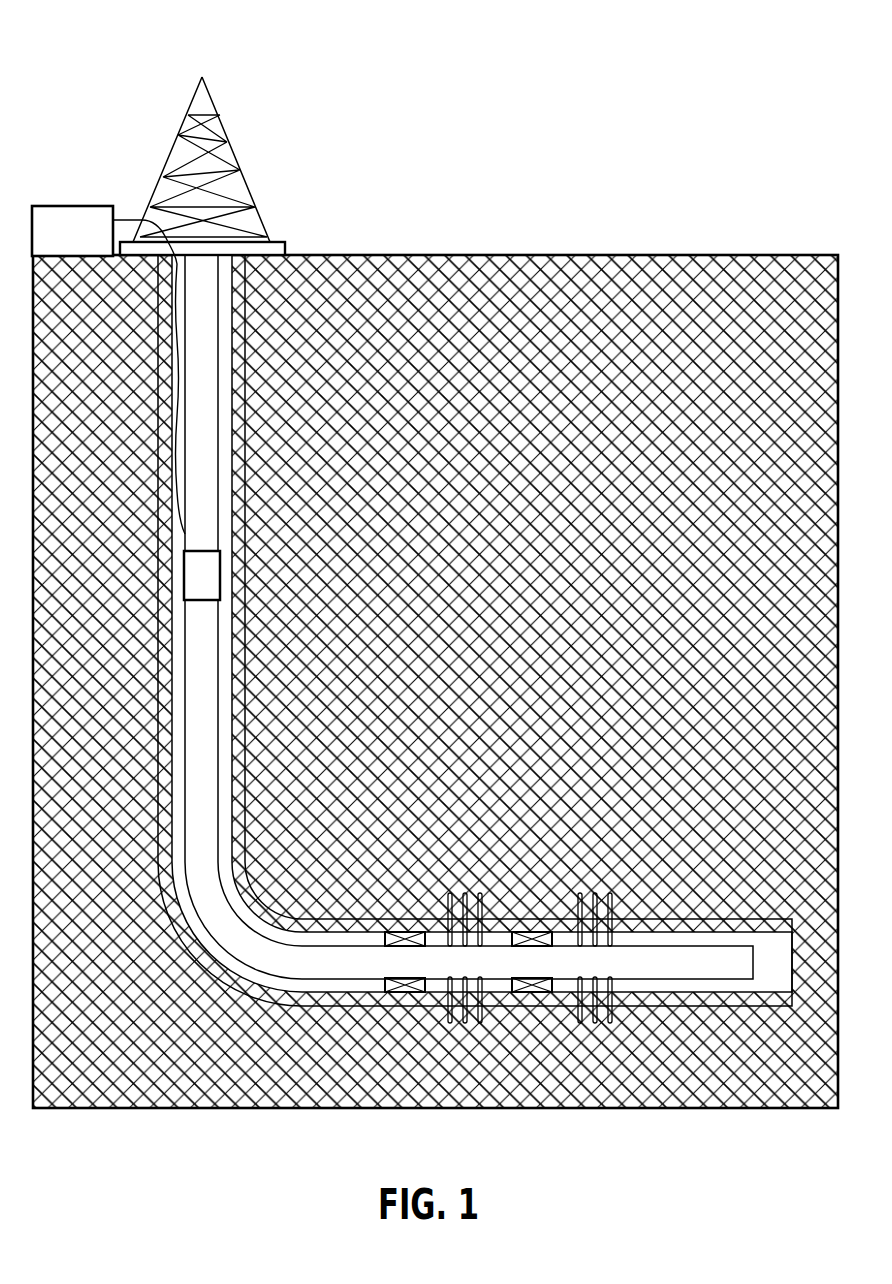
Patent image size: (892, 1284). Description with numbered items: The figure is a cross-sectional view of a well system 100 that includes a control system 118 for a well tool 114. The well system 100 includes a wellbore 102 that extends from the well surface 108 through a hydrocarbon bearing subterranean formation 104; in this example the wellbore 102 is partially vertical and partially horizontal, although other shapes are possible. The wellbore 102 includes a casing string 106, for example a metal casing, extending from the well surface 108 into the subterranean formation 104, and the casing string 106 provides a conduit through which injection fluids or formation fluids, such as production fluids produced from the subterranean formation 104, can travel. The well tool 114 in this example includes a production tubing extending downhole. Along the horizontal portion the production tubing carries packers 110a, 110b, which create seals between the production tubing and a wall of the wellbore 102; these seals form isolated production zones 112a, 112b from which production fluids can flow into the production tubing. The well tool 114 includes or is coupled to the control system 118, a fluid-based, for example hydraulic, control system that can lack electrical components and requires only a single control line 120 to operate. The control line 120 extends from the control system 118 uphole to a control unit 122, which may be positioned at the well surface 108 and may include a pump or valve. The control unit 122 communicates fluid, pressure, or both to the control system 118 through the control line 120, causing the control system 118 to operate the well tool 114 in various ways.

The well system 100 is at (470, 95).
The wellbore 102 is at (233, 278).
The subterranean formation 104 is at (568, 280).
The casing string 106 is at (250, 677).
The well surface 108 is at (692, 255).
The packer 110a is at (403, 940).
The packer 110b is at (530, 940).
The production zone 112a is at (452, 1026).
The production zone 112b is at (580, 1026).
The well tool 114 is at (212, 466).
The control system 118 is at (212, 578).
The control line 120 is at (178, 313).
The control unit 122 is at (68, 230).